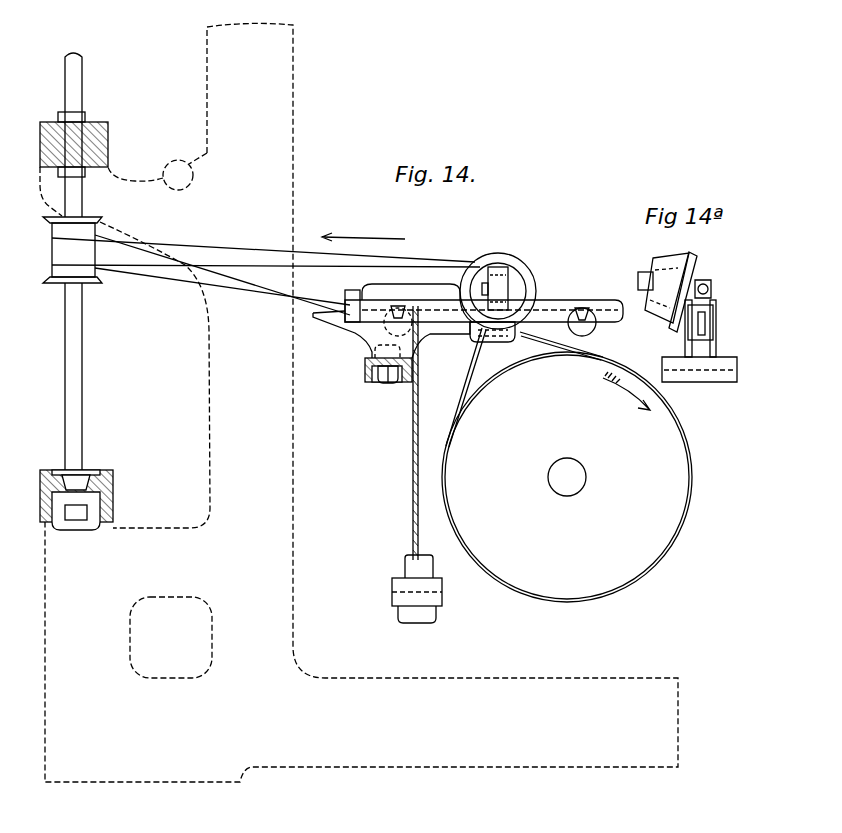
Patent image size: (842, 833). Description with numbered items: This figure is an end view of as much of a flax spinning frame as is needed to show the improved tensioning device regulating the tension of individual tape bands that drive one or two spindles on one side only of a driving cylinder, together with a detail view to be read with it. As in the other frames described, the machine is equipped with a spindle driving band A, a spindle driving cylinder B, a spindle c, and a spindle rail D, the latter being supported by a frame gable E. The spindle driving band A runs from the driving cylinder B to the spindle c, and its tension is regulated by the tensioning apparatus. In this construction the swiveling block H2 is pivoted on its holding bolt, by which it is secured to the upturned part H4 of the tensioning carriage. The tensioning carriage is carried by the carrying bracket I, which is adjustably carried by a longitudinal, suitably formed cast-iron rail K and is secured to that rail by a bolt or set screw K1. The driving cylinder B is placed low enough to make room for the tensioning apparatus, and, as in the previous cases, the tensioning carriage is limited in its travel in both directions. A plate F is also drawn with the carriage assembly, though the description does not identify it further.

The spindle driving band A is at (248, 284).
The spindle driving cylinder B is at (567, 465).
The spindle c is at (66, 340).
The spindle rail D is at (108, 125).
The frame gable E is at (280, 78).
The plate F is at (540, 295).
The swiveling block H2 is at (500, 275).
The upturned part of the tensioning carriage H4 is at (518, 284).
The carrying bracket I is at (352, 334).
The cast-iron rail K is at (365, 370).
The bolt or set screw K1 is at (392, 384).